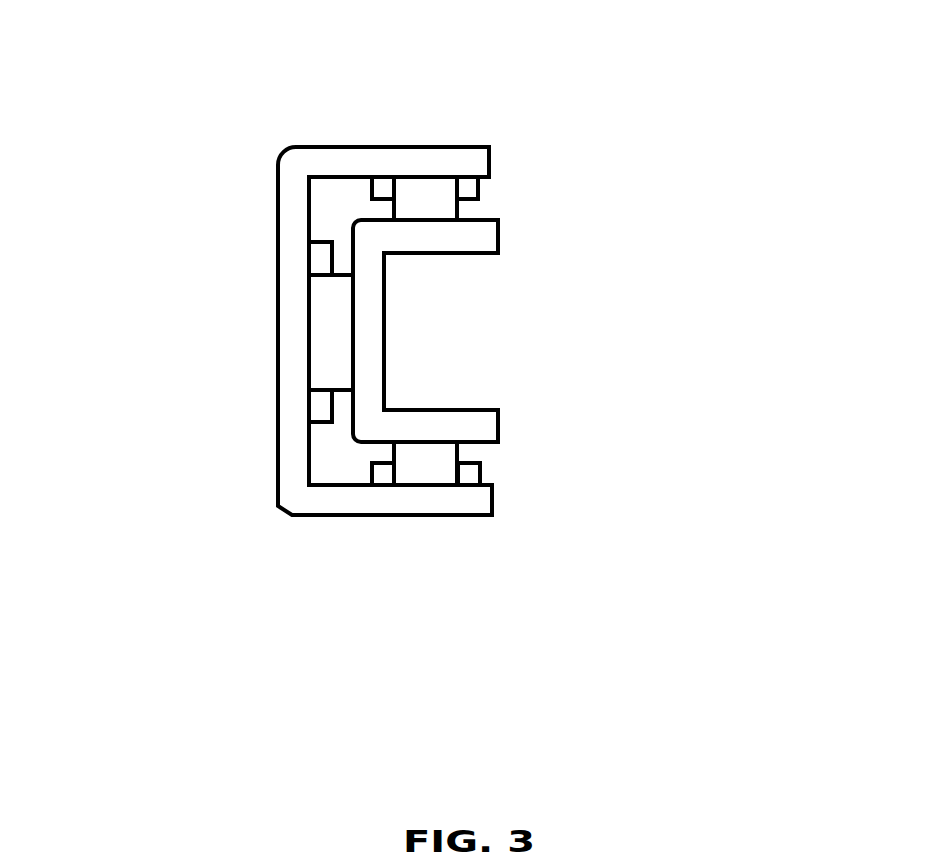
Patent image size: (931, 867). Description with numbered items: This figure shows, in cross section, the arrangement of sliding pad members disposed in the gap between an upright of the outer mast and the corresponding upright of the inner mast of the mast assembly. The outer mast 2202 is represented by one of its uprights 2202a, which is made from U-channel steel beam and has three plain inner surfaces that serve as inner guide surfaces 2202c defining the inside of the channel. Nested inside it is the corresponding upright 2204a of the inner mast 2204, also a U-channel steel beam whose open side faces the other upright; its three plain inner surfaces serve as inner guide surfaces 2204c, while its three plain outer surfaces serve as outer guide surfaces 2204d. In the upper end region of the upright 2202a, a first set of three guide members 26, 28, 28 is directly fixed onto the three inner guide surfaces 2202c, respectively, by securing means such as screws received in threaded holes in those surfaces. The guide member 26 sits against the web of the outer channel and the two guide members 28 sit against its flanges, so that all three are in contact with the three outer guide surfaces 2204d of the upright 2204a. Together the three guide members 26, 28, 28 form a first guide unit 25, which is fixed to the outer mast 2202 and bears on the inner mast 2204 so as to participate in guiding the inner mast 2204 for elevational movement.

The first guide unit 25 is at (262, 353).
The guide member 26 is at (327, 310).
The guide member 28 is at (415, 202).
The outer mast 2202 is at (468, 130).
The upright 2202a is at (337, 157).
The inner guide surface 2202c is at (313, 180).
The inner mast 2204 is at (502, 218).
The upright 2204a is at (471, 420).
The inner guide surface 2204c is at (384, 345).
The outer guide surface 2204d is at (483, 217).